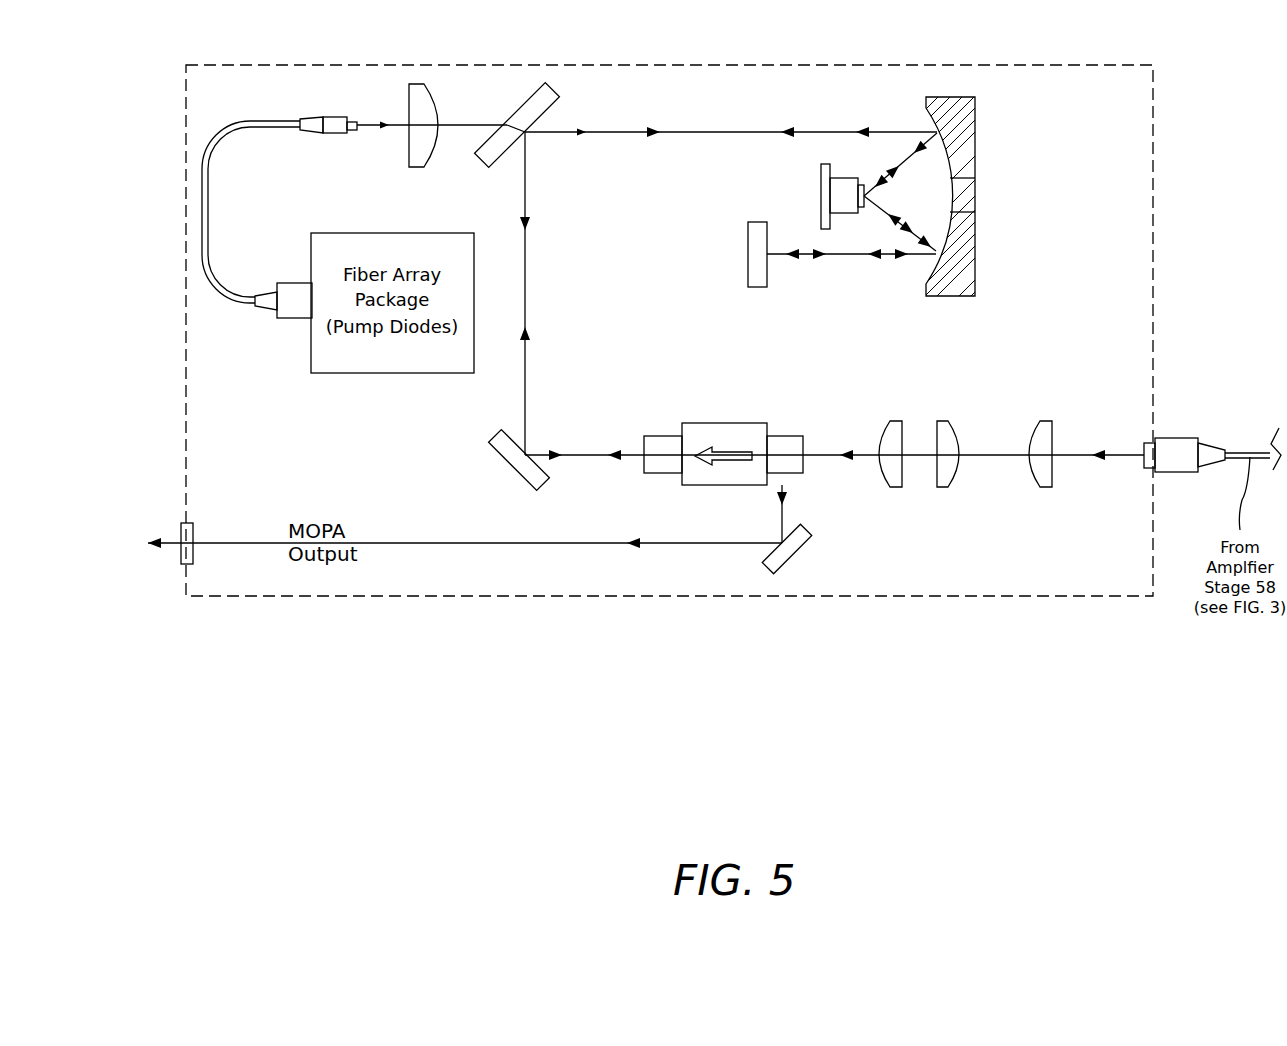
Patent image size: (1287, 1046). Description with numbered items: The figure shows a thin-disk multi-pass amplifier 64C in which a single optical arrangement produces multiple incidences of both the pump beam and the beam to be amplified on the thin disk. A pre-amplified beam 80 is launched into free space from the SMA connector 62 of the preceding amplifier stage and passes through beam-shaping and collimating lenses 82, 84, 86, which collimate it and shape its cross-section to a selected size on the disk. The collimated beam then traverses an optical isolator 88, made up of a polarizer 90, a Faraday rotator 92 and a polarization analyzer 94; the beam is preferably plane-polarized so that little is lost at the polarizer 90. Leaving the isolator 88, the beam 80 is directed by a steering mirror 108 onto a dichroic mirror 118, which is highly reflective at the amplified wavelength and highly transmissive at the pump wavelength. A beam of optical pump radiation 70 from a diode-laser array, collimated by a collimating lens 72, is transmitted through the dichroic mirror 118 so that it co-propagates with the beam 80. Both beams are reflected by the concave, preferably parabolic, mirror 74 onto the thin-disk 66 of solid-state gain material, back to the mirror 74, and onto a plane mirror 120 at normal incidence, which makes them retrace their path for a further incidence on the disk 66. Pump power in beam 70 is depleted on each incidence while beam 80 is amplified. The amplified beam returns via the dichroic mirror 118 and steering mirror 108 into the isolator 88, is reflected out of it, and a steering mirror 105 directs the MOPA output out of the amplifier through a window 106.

The thin-disk amplifier 64C is at (797, 608).
The beam of optical pump radiation 70 is at (392, 128).
The collimating lens 72 is at (430, 110).
The dichroic mirror 118 is at (549, 113).
The pre-amplified beam 80 is at (598, 134).
The thin-disk 66 is at (850, 188).
The concave mirror 74 is at (946, 237).
The plane mirror 120 is at (763, 265).
The optical isolator 88 is at (718, 425).
The polarization analyzer 94 is at (663, 444).
The Faraday rotator 92 is at (720, 430).
The polarizer 90 is at (773, 440).
The steering mirror 108 is at (497, 444).
The steering mirror 105 is at (806, 548).
The window 106 is at (192, 530).
The lens 86 is at (896, 435).
The lens 84 is at (948, 478).
The lens 82 is at (1040, 478).
The SMA connector 62 is at (1178, 445).